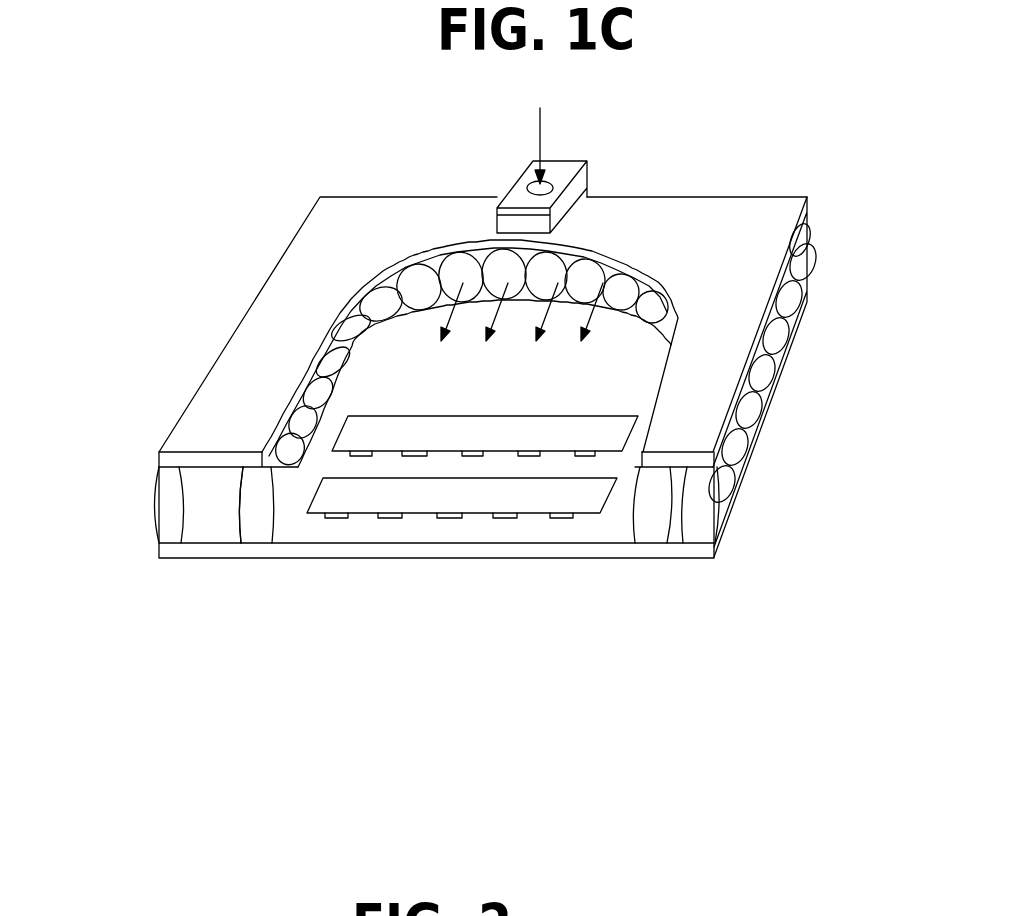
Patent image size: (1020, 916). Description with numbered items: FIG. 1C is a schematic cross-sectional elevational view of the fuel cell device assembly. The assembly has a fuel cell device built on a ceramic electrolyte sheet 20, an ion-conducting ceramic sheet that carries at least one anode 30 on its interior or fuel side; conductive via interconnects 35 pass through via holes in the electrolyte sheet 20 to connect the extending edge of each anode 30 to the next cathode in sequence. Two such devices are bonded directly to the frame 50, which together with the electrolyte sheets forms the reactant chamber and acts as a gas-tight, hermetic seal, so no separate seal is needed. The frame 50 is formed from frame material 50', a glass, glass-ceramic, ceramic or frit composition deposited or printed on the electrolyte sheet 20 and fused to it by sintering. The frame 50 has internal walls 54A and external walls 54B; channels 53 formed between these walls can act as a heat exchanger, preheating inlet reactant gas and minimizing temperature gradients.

The ceramic electrolyte sheet 20 is at (220, 397).
The anode 30 is at (587, 433).
The via interconnect 35 is at (490, 498).
The frame 50 is at (565, 424).
The frame material 50' is at (431, 307).
The channel 53 is at (208, 516).
The internal wall 54A is at (257, 512).
The external wall 54B is at (155, 508).